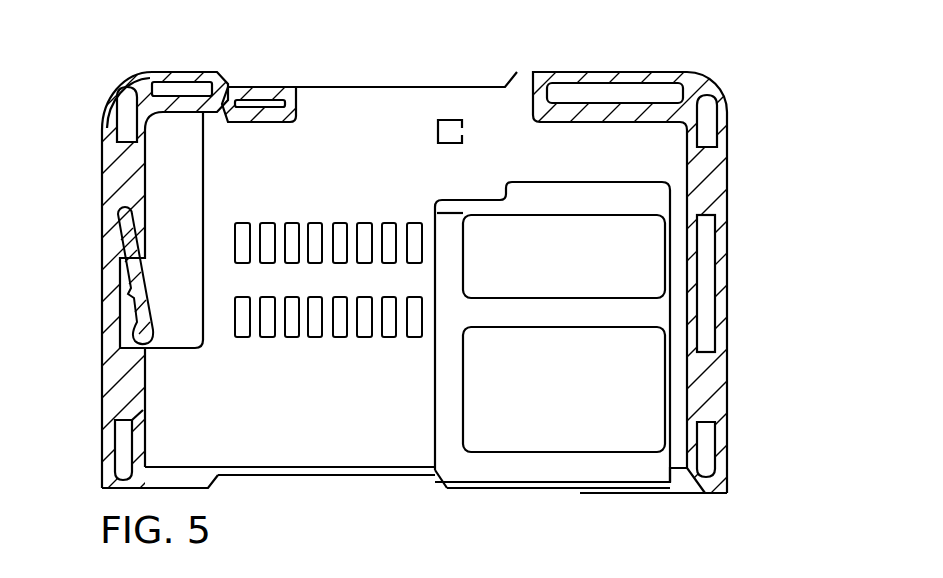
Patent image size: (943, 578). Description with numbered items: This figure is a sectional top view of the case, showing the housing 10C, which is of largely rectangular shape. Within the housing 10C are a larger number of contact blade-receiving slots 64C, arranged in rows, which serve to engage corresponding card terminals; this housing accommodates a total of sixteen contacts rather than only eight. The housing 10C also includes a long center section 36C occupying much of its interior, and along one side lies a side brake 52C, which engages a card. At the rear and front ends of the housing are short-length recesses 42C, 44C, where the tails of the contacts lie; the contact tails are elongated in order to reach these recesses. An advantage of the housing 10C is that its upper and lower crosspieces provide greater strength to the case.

The housing 10C is at (729, 295).
The short-length recess 42C is at (363, 88).
The short-length recess 44C is at (253, 475).
The long center section 36C is at (355, 437).
The contact blade-receiving slots 64C is at (267, 222).
The side brake 52C is at (158, 272).